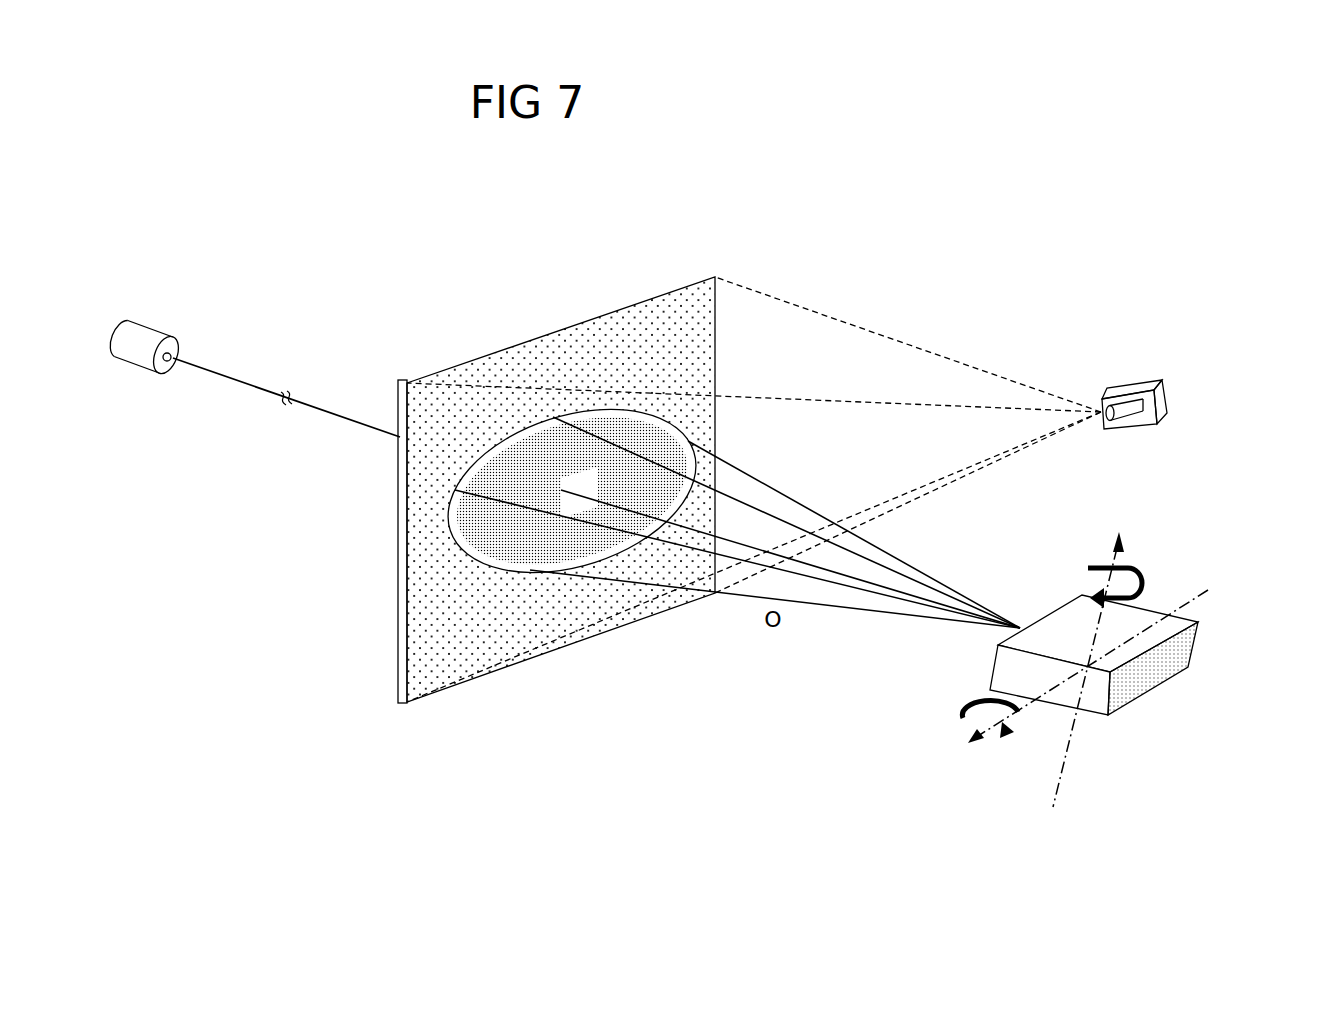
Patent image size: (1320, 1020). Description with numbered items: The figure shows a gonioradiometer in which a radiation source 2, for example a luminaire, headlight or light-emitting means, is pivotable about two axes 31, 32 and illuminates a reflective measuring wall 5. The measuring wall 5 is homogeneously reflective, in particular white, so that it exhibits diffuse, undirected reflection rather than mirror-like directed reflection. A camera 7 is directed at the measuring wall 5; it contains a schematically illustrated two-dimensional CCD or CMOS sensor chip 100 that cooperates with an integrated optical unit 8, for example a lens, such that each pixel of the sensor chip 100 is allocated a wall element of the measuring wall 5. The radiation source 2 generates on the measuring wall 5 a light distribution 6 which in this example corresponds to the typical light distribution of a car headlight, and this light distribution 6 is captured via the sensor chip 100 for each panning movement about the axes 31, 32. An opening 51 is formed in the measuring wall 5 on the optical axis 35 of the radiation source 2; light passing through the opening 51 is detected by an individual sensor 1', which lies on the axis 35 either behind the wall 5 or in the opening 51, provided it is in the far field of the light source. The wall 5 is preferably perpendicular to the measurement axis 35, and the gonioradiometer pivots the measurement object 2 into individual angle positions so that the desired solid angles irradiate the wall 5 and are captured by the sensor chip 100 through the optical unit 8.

The individual sensor 1' is at (139, 371).
The optical axis 35 is at (337, 418).
The reflective measuring wall 5 is at (450, 665).
The light distribution 6 is at (456, 546).
The opening 51 is at (578, 489).
The camera 7 is at (1136, 381).
The optical unit 8 is at (1103, 431).
The sensor chip 100 is at (1161, 402).
The radiation source 2 is at (1127, 705).
The first axis 31 is at (1062, 776).
The second axis 32 is at (1205, 598).